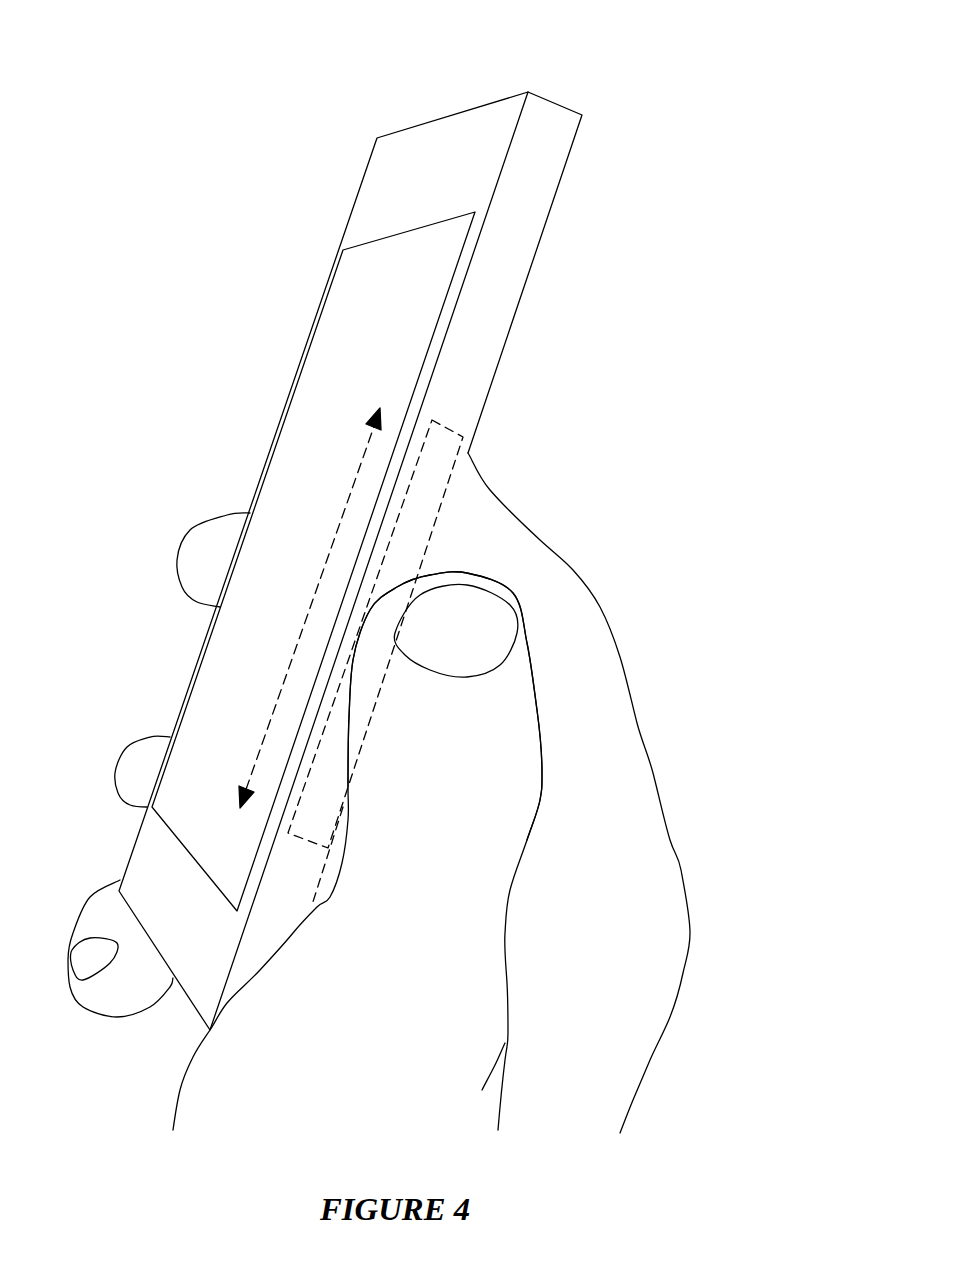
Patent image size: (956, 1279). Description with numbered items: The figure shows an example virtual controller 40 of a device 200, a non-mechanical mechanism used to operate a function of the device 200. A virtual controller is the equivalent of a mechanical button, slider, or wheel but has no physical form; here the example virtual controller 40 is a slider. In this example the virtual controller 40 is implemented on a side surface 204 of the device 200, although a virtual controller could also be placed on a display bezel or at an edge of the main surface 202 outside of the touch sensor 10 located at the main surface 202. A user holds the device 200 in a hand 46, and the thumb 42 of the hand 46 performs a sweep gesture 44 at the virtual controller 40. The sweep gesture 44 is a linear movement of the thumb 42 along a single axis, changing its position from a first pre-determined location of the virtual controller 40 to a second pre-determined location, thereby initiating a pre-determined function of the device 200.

The device 200 is at (399, 519).
The main surface 202 is at (423, 145).
The side surface 204 is at (546, 128).
The touch sensor 10 is at (335, 340).
The virtual controller 40 is at (440, 440).
The sweep gesture 44 is at (318, 566).
The thumb 42 is at (497, 625).
The hand 46 is at (642, 890).